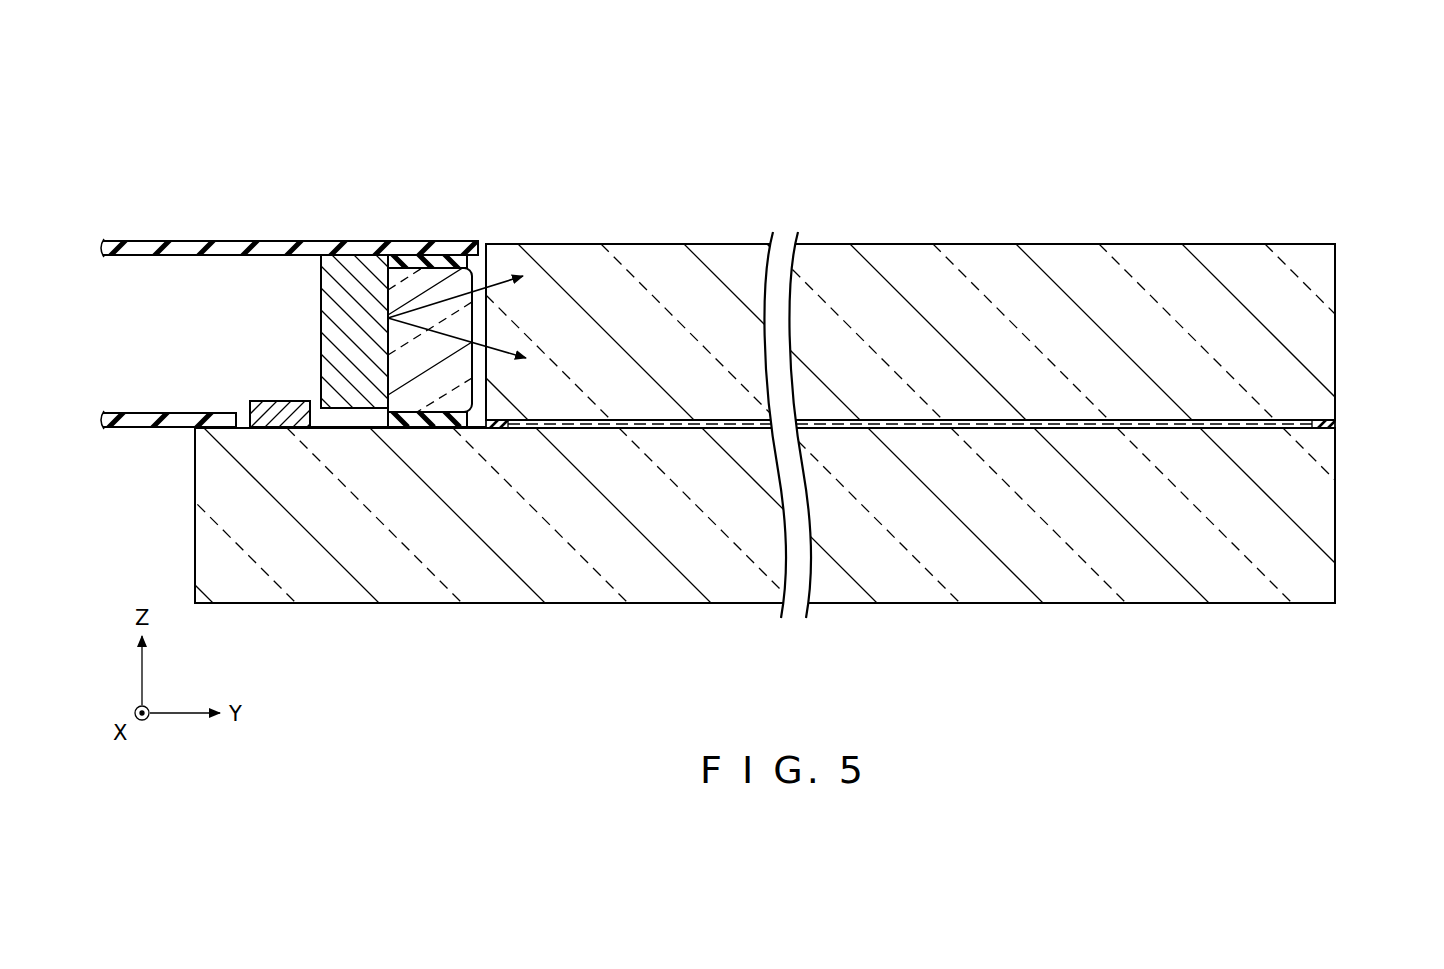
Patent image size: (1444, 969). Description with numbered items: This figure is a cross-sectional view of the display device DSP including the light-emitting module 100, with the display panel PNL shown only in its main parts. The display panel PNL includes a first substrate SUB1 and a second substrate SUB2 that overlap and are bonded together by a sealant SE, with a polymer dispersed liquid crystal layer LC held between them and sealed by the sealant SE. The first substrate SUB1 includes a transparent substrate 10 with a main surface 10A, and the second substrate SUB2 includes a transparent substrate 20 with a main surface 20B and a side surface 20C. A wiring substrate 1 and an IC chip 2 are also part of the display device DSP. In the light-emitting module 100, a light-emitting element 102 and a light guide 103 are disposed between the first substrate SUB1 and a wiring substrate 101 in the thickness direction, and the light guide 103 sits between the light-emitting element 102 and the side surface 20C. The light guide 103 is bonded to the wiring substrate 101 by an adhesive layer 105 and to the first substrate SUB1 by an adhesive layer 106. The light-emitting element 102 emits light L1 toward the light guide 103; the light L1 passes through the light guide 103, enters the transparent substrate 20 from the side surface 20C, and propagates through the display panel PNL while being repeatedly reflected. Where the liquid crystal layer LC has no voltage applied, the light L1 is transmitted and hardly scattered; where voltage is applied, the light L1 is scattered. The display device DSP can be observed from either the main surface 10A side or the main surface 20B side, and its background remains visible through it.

The display device DSP is at (741, 364).
The display panel PNL is at (305, 607).
The transparent substrate 10 is at (741, 559).
The main surface 10A is at (1155, 607).
The first substrate SUB1 is at (1340, 477).
The transparent substrate 20 is at (896, 407).
The main surface 20B is at (1146, 240).
The side surface 20C is at (480, 385).
The second substrate SUB2 is at (1338, 306).
The liquid crystal layer LC is at (1285, 427).
The sealant SE is at (497, 436).
The light L1 is at (498, 350).
The light-emitting module 100 is at (289, 399).
The wiring substrate 101 is at (258, 247).
The light-emitting element 102 is at (328, 286).
The light guide 103 is at (405, 345).
The adhesive layer 105 is at (452, 262).
The adhesive layer 106 is at (417, 418).
The wiring substrate 1 is at (161, 412).
The IC chip 2 is at (270, 400).